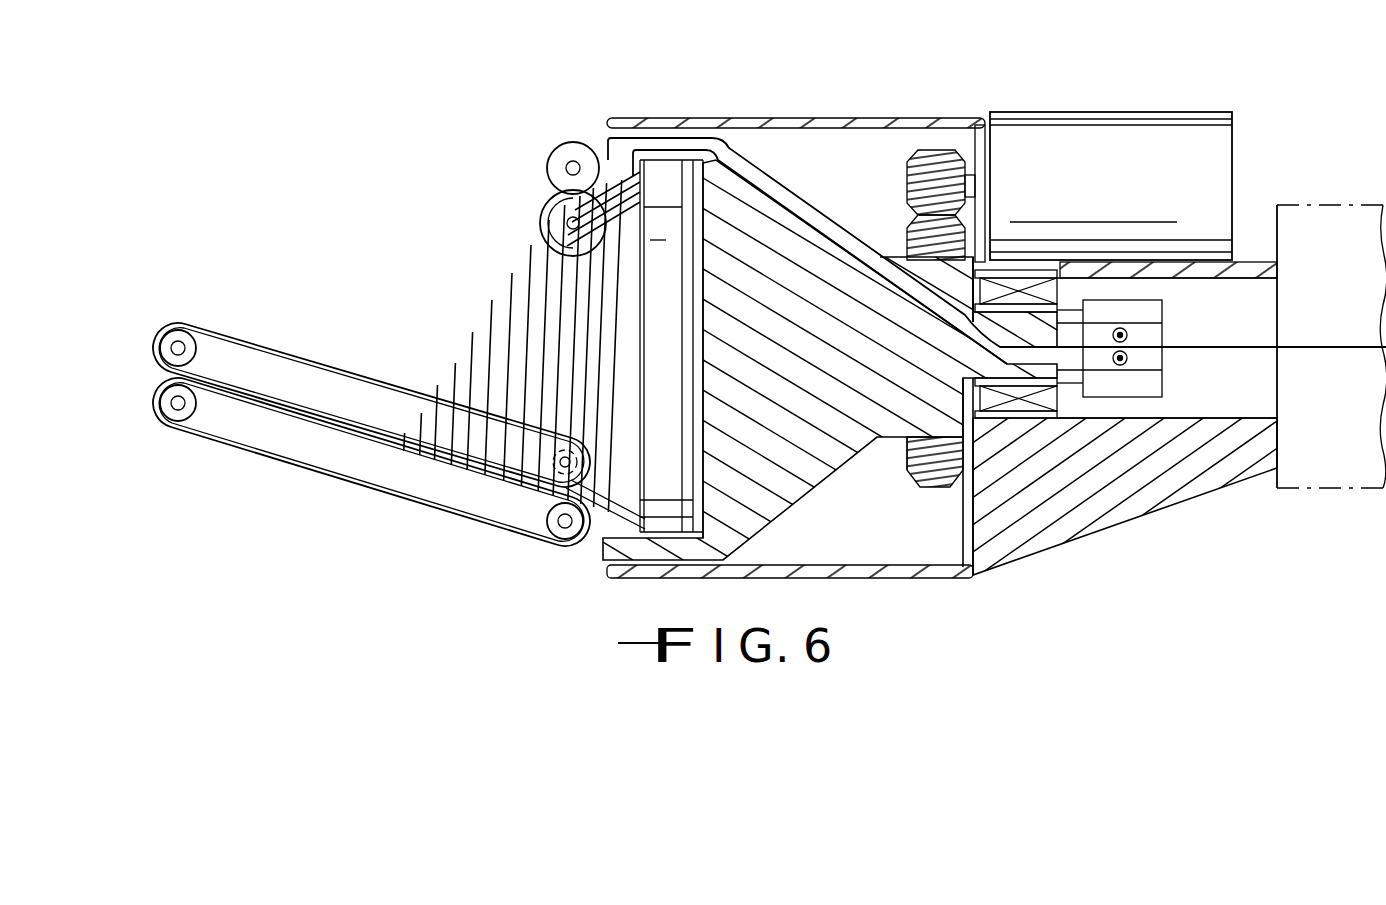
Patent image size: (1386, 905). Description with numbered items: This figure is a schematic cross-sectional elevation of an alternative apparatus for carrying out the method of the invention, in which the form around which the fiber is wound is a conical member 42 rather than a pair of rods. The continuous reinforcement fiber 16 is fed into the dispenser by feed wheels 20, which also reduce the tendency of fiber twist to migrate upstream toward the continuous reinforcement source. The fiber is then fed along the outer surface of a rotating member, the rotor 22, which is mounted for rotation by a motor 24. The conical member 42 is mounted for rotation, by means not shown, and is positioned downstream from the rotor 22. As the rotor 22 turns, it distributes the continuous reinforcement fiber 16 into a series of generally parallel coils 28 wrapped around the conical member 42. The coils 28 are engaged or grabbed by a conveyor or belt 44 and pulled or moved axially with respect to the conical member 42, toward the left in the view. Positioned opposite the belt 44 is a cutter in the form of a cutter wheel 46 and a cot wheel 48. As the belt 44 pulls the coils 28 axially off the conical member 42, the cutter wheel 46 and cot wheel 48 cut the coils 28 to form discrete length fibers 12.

The discrete length fibers 12 is at (492, 304).
The continuous reinforcement fiber 16 is at (1293, 344).
The feed wheels 20 is at (1130, 347).
The rotor 22 is at (822, 478).
The motor 24 is at (1190, 112).
The coils 28 is at (612, 150).
The conical member 42 is at (676, 180).
The belt 44 is at (395, 498).
The cutter wheel 46 is at (550, 200).
The cot wheel 48 is at (556, 151).